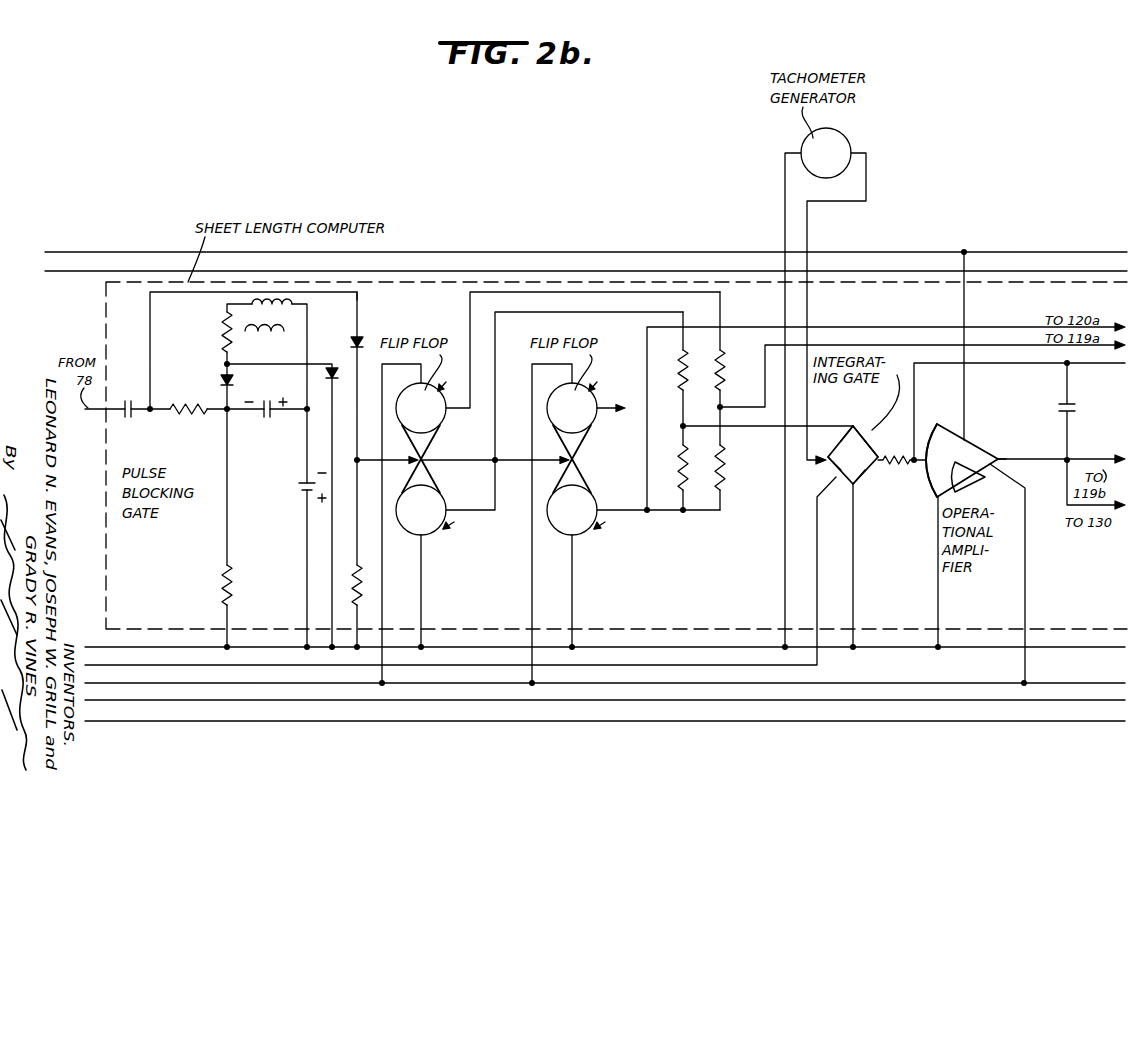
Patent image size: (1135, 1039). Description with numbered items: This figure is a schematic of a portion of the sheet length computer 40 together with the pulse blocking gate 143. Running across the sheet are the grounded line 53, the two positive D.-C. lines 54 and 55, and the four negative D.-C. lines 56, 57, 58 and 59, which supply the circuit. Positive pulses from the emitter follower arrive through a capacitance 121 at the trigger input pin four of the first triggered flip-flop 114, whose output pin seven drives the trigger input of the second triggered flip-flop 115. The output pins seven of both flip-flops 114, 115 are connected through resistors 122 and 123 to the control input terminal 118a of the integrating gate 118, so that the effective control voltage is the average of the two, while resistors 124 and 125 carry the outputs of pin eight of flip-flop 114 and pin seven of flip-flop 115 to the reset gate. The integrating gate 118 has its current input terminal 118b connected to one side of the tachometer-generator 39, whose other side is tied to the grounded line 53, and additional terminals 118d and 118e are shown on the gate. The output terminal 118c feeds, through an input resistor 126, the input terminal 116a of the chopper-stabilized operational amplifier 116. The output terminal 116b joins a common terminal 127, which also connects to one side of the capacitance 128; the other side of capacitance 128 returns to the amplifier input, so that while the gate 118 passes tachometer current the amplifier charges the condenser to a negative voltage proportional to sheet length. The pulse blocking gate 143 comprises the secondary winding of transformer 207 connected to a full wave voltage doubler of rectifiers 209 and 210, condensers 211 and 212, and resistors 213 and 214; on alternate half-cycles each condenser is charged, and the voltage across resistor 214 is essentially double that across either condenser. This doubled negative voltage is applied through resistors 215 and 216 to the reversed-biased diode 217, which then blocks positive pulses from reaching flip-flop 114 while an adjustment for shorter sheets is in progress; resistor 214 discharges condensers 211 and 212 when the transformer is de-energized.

The tachometer-generator 39 is at (841, 131).
The sheet length computer 40 is at (884, 312).
The grounded line 53 is at (883, 647).
The positive D.-C. line 54 is at (48, 272).
The positive D.-C. line 55 is at (46, 251).
The negative D.-C. line 56 is at (805, 665).
The negative D.-C. line 57 is at (993, 680).
The negative D.-C. line 58 is at (918, 701).
The negative D.-C. line 59 is at (921, 722).
The triggered flip-flop 114 is at (435, 462).
The triggered flip-flop 115 is at (584, 461).
The chopper-stabilized operational amplifier 116 is at (978, 442).
The input terminal of operational amplifier 116a is at (924, 457).
The output terminal of operational amplifier 116b is at (997, 458).
The integrating gate 118 is at (870, 472).
The control input terminal 118a is at (865, 433).
The current input terminal 118b is at (850, 431).
The output terminal 118c is at (859, 455).
The integrating gate terminal 118d is at (838, 470).
The integrating gate terminal 118e is at (857, 488).
The capacitance 121 is at (136, 415).
The resistor 122 is at (677, 370).
The resistor 123 is at (677, 459).
The resistor 124 is at (726, 373).
The resistor 125 is at (726, 468).
The input resistor 126 is at (906, 461).
The common terminal 127 is at (1068, 456).
The capacitance 128 is at (1070, 407).
The gate 143 is at (318, 346).
The transformer 207 is at (280, 328).
The rectifier 209 is at (233, 380).
The rectifier 210 is at (348, 364).
The condenser 211 is at (278, 413).
The condenser 212 is at (302, 483).
The resistor 213 is at (221, 333).
The resistor 214 is at (233, 579).
The resistor 215 is at (182, 415).
The resistor 216 is at (367, 592).
The reversed-biased diode 217 is at (363, 335).